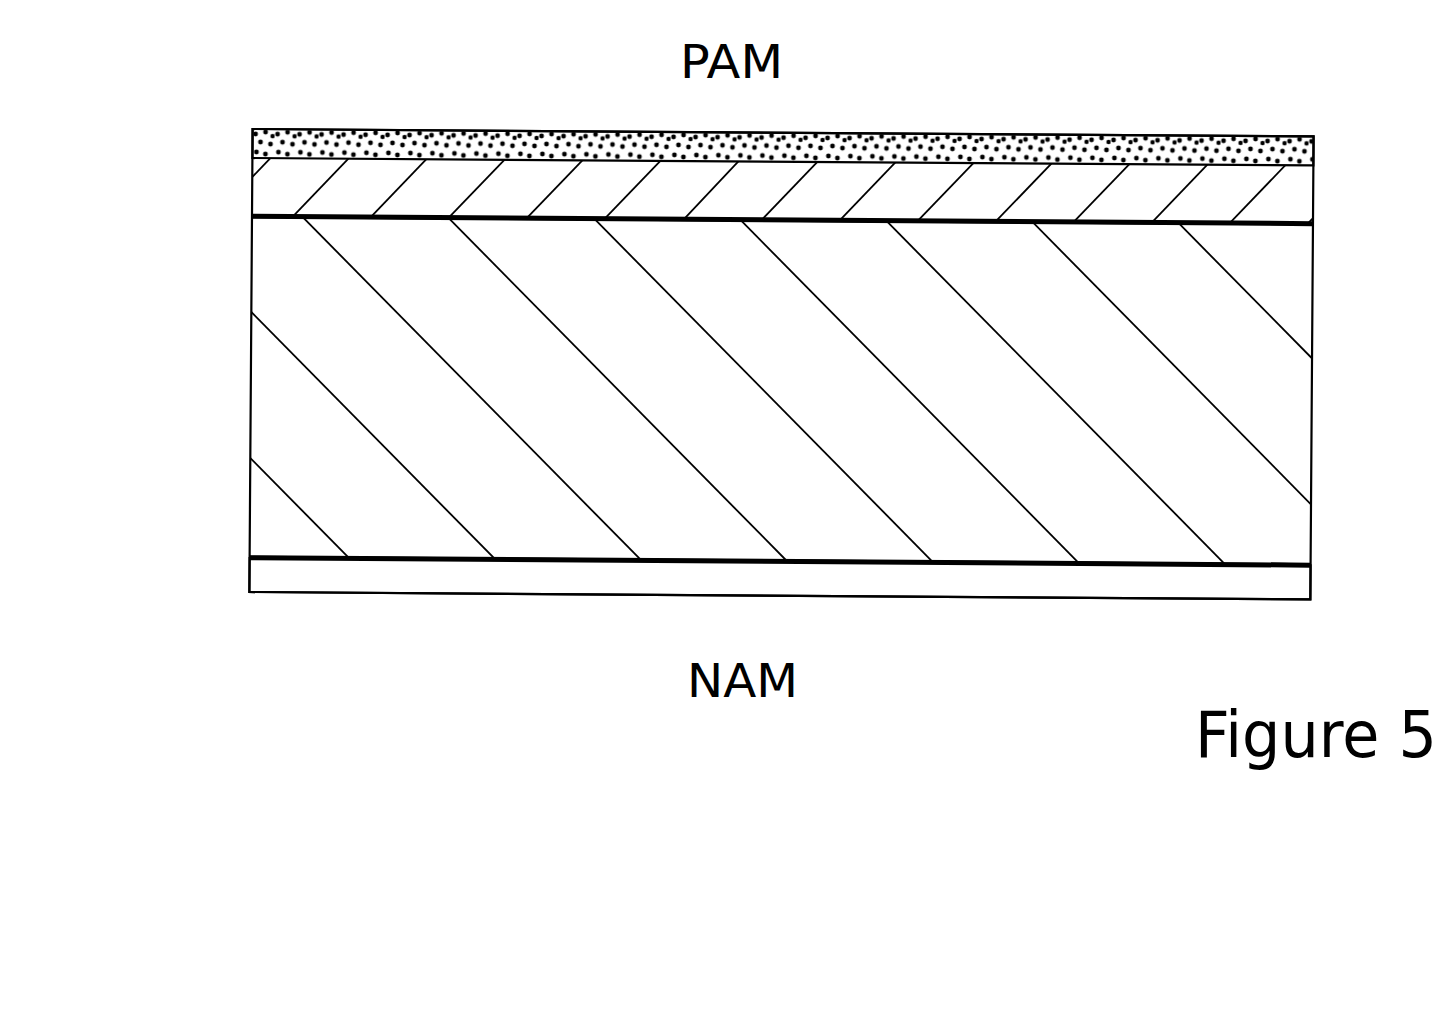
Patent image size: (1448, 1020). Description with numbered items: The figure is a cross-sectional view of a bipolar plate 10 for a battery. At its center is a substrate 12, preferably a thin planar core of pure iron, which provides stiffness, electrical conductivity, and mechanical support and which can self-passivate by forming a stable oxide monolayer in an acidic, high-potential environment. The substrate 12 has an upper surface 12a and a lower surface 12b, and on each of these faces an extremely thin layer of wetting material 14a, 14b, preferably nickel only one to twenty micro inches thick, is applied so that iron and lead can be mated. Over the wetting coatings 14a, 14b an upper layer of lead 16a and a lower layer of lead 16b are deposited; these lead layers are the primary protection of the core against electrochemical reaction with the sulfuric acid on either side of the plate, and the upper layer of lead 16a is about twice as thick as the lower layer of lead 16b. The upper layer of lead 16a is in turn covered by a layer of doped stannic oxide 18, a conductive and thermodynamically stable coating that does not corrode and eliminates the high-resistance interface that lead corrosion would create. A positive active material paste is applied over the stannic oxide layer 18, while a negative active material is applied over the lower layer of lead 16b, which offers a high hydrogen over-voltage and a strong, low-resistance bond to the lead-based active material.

The bipolar plate 10 is at (1086, 43).
The substrate 12 is at (270, 372).
The upper surface 12a is at (288, 232).
The lower surface 12b is at (282, 542).
The wetting material layer 14a is at (508, 218).
The wetting material layer 14b is at (558, 560).
The upper layer of lead 16a is at (313, 177).
The lower layer of lead 16b is at (428, 575).
The layer of doped stannic oxide 18 is at (502, 130).